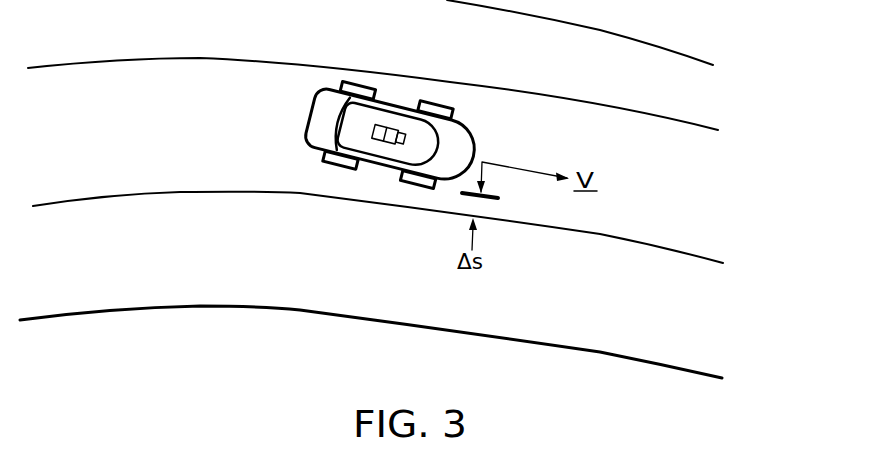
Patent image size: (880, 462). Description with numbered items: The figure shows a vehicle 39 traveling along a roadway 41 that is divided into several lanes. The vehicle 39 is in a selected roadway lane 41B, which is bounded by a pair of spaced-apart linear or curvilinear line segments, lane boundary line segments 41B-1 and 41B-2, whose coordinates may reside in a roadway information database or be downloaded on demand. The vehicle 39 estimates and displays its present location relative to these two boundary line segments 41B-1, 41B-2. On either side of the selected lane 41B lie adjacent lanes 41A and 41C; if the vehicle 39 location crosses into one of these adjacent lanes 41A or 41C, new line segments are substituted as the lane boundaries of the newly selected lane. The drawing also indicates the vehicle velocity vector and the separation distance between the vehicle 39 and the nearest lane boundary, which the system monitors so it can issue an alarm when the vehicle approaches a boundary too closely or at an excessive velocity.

The vehicle 39 is at (413, 137).
The roadway 41 is at (415, 189).
The adjacent lane 41A is at (145, 300).
The selected roadway lane 41B is at (380, 160).
The adjacent lane 41C is at (148, 48).
The lane boundary line segment 41B-1 is at (610, 235).
The lane boundary line segment 41B-2 is at (613, 102).